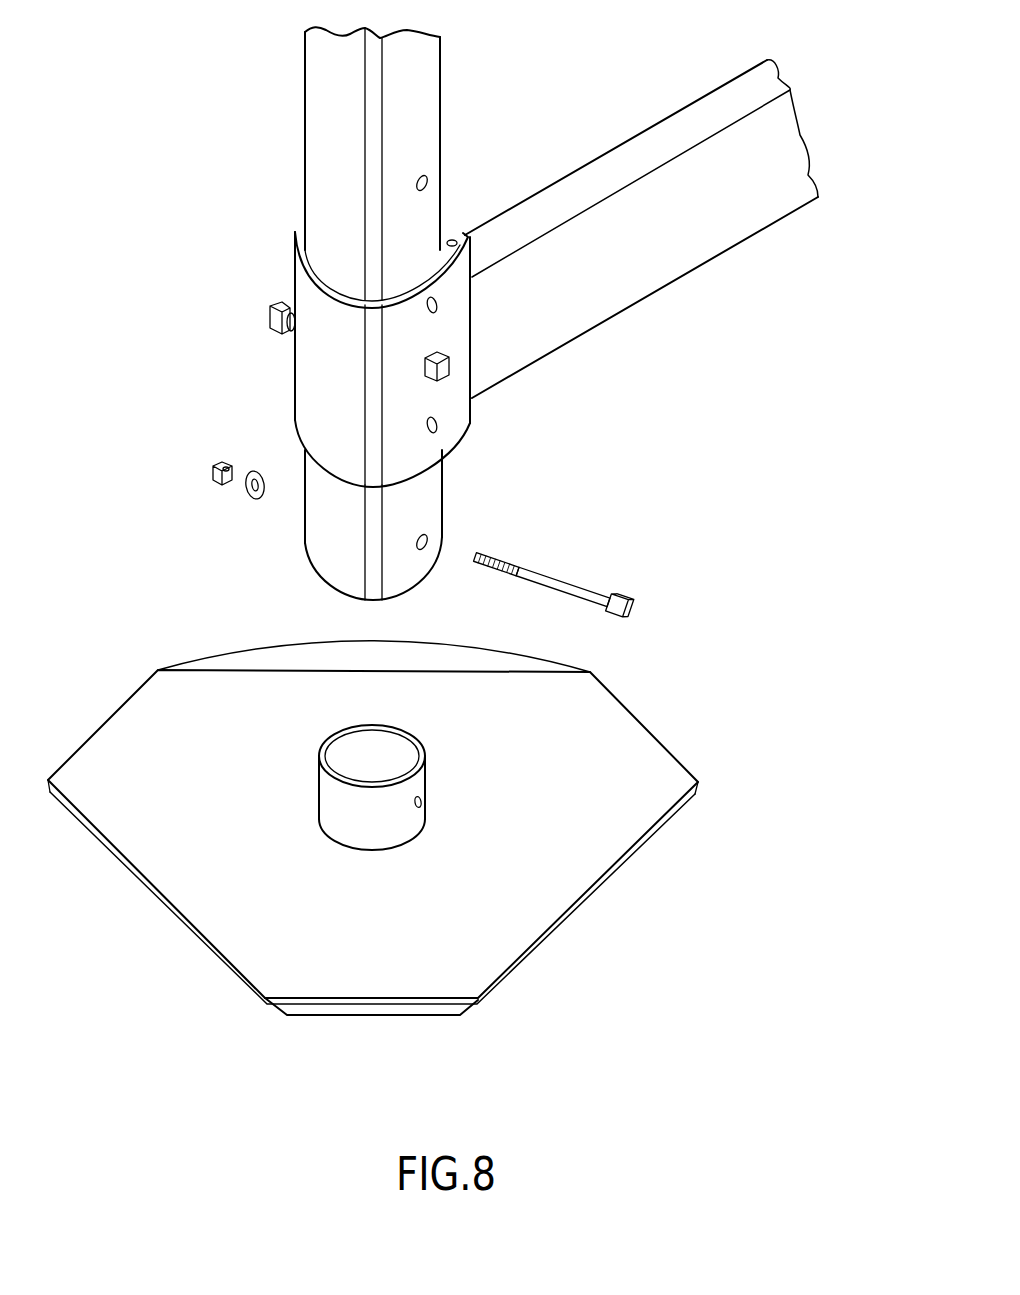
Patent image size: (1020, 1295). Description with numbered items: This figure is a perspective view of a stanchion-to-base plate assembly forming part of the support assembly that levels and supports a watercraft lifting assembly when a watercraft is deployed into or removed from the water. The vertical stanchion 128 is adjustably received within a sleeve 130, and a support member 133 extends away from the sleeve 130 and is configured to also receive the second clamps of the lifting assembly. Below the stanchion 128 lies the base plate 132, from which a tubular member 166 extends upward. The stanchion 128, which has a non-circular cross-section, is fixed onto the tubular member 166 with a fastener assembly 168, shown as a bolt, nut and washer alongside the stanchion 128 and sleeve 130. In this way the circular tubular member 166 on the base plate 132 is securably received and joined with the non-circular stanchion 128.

The stanchion 128 is at (323, 155).
The sleeve 130 is at (337, 393).
The support member 133 is at (660, 257).
The fastener assembly 168 is at (605, 578).
The base plate 132 is at (610, 738).
The tubular member 166 is at (393, 818).